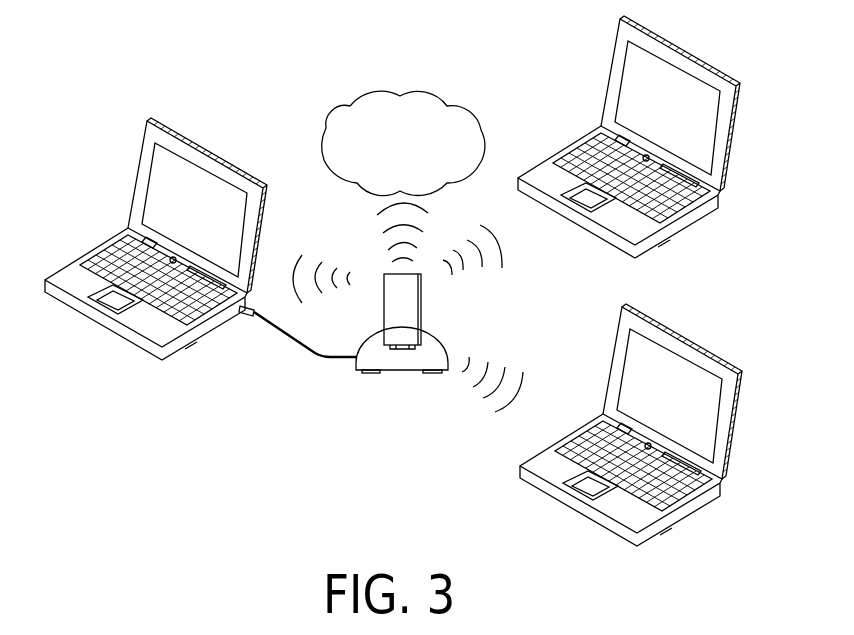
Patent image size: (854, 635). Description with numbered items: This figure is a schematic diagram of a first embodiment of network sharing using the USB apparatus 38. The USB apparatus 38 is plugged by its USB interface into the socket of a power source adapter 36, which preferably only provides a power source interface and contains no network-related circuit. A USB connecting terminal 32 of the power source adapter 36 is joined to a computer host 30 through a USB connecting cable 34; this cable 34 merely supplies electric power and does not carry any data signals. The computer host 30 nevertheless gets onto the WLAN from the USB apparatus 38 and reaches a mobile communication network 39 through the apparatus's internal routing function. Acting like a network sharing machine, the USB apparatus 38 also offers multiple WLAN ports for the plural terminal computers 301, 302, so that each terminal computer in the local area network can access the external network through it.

The computer host 30 is at (212, 165).
The terminal computer 301 is at (677, 60).
The terminal computer 302 is at (677, 350).
The USB connecting terminal 32 is at (247, 317).
The USB connecting cable 34 is at (312, 350).
The power source adapter 36 is at (405, 365).
The USB apparatus 38 is at (415, 300).
The mobile communication network 39 is at (425, 92).